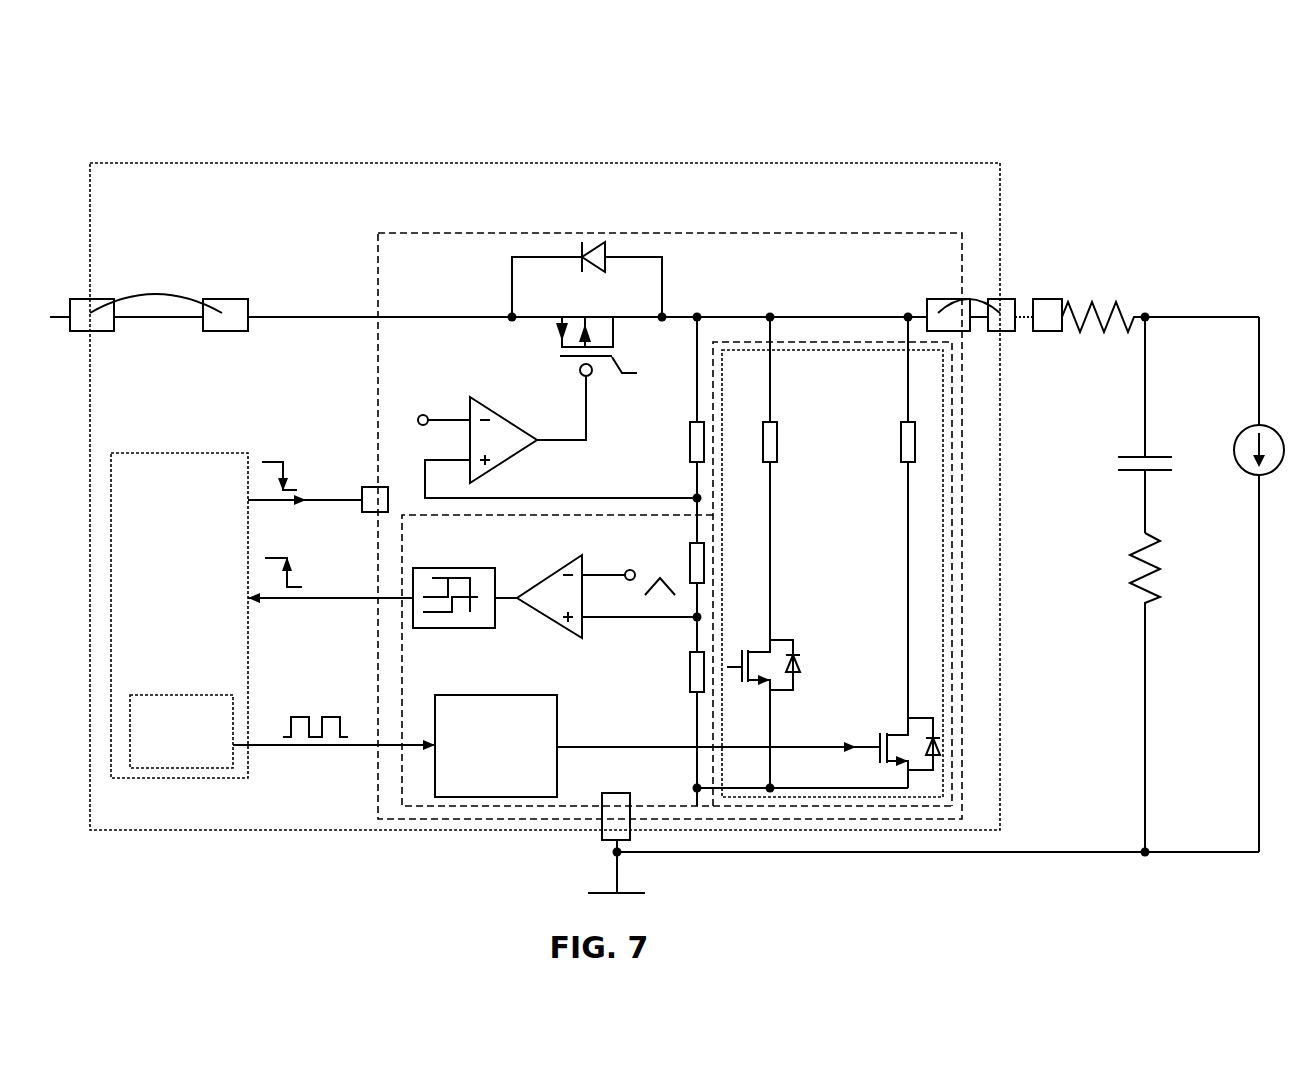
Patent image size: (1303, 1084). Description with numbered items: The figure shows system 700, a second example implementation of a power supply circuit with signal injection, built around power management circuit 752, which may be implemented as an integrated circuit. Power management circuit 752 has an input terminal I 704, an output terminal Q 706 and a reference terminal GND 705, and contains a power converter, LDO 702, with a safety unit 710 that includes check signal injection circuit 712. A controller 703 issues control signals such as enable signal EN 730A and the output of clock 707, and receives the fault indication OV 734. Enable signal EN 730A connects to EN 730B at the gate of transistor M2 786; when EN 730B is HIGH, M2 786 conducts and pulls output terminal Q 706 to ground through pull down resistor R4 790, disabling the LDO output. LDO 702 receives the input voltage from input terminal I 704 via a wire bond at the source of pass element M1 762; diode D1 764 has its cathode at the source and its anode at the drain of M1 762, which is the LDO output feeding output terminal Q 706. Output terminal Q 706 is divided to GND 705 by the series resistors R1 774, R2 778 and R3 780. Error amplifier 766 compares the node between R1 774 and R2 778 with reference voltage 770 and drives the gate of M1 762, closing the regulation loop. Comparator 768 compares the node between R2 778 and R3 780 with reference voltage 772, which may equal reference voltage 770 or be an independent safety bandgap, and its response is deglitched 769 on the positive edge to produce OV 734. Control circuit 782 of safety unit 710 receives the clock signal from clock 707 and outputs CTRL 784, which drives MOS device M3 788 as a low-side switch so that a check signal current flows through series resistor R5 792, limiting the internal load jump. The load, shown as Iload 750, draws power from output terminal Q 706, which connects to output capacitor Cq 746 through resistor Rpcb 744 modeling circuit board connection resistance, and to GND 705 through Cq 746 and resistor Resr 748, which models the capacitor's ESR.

The system 700 is at (188, 88).
The LDO 702 is at (670, 526).
The controller 703 is at (179, 615).
The input terminal I 704 is at (488, 286).
The reference terminal GND 705 is at (900, 843).
The output terminal Q 706 is at (994, 284).
The clock 707 is at (181, 731).
The safety unit 710 is at (520, 822).
The check signal injection circuit 712 is at (823, 560).
The enable signal EN 730A is at (318, 467).
The enable signal EN 730B is at (742, 635).
The fault indication OV 734 is at (330, 572).
The resistor Rpcb 744 is at (1160, 348).
The output capacitor Cq 746 is at (1122, 425).
The resistor Resr 748 is at (1114, 695).
The load Iload 750 is at (1234, 584).
The power management circuit 752 is at (277, 834).
The pass element M1 762 is at (573, 378).
The diode D1 764 is at (587, 279).
The error amplifier 766 is at (513, 457).
The comparator 768 is at (555, 570).
The deglitch 769 is at (460, 633).
The reference voltage 770 is at (444, 394).
The reference voltage 772 is at (608, 576).
The resistor R1 774 is at (679, 430).
The resistor R2 778 is at (677, 589).
The resistor R3 780 is at (674, 727).
The control circuit 782 is at (496, 746).
The CTRL 784 is at (718, 749).
The transistor M2 786 is at (793, 709).
The MOS device M3 788 is at (901, 736).
The pull down resistor R4 790 is at (793, 484).
The resistor R5 792 is at (887, 526).